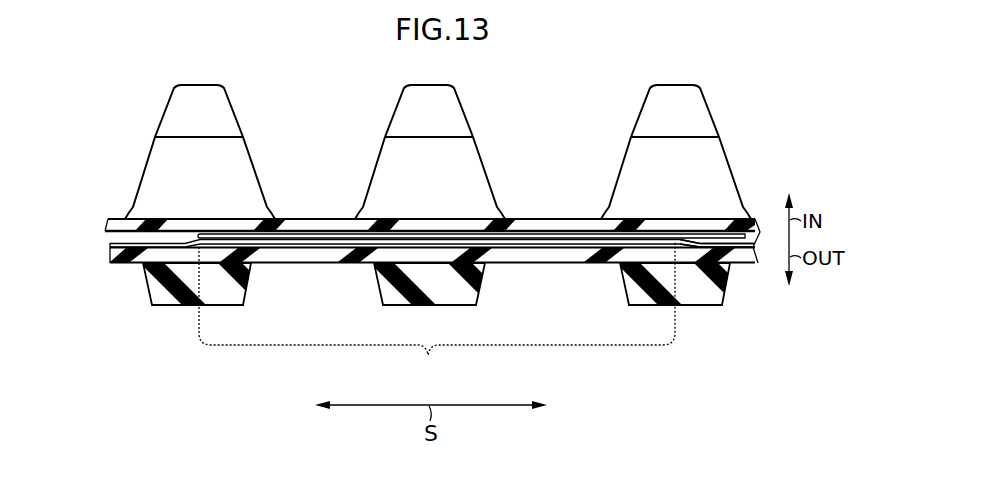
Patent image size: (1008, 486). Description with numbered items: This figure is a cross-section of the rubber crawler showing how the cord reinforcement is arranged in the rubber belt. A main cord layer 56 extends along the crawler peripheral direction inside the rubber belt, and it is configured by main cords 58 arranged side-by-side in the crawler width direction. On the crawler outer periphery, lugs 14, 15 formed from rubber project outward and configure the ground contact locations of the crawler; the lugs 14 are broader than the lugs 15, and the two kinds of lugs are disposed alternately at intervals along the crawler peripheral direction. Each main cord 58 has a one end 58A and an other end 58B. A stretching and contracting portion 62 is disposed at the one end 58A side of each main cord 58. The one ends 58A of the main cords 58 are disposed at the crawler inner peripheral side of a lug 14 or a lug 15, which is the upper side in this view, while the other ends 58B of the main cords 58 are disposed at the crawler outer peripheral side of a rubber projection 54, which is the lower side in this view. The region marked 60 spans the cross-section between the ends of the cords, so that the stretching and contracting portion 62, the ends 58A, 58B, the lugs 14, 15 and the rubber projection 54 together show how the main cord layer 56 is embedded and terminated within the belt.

The rubber projection 54 is at (233, 110).
The main cord layer 56 is at (413, 303).
The main cord 58 is at (147, 246).
The one end of main cord 58A is at (678, 248).
The other end of main cord 58B is at (200, 236).
The stretching and contracting portion 62 is at (311, 254).
The lug 14 is at (163, 307).
The lug 15 is at (476, 306).
The overlap region 60 is at (437, 313).